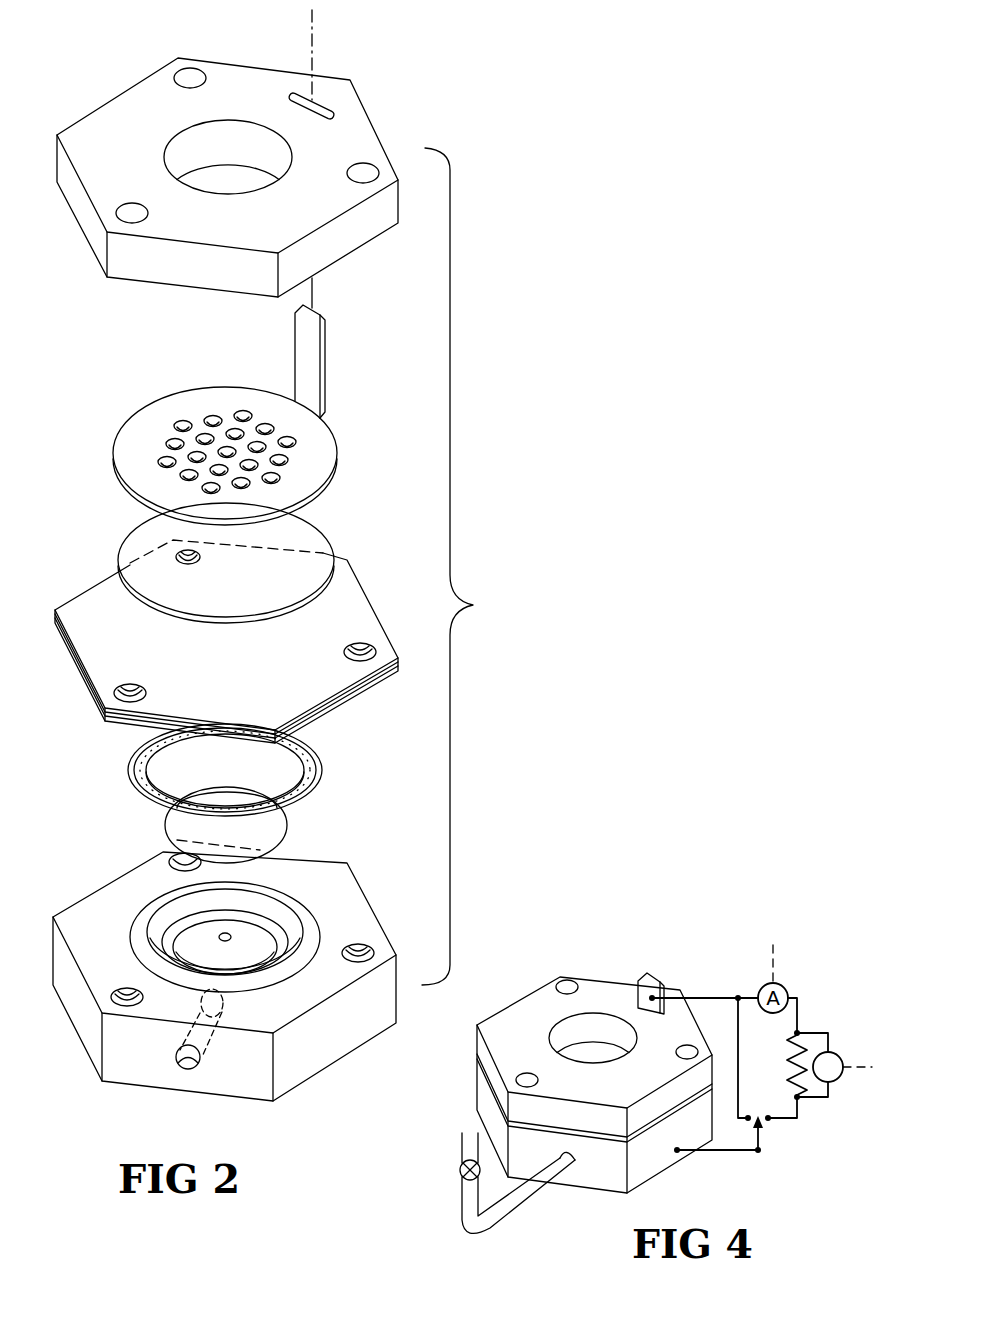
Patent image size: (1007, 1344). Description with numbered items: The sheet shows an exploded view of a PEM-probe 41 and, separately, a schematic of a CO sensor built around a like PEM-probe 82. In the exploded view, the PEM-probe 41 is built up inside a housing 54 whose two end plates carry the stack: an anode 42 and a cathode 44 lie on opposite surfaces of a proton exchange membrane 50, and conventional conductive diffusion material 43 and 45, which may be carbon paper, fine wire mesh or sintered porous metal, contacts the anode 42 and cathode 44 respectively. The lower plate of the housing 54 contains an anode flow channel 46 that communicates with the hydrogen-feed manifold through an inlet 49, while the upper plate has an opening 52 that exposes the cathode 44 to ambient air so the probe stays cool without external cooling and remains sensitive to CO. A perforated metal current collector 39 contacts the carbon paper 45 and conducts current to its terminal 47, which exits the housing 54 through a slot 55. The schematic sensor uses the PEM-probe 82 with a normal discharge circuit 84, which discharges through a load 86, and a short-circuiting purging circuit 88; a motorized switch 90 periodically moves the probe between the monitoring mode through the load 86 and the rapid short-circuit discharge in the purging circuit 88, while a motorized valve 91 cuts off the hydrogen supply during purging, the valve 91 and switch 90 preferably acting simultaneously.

In FIG. 2, the perforated electrode disk 39 is at (315, 438).
In FIG. 2, the PEM-probe 41 is at (473, 605).
In FIG. 2, the anode 42 is at (117, 723).
In FIG. 2, the conductive diffusion material 43 is at (273, 830).
In FIG. 2, the cathode 44 is at (95, 607).
In FIG. 2, the conductive diffusion material 45 is at (308, 537).
In FIG. 2, the anode flow channel 46 is at (283, 930).
In FIG. 2, the terminal 47 is at (313, 335).
In FIG. 2, the inlet 49 is at (187, 1063).
In FIG. 2, the proton exchange membrane 50 is at (345, 697).
In FIG. 2, the opening 52 is at (208, 135).
In FIG. 4, the opening 52 is at (572, 1032).
In FIG. 2, the housing 54 is at (380, 135).
In FIG. 2, the slot 55 is at (317, 110).
In FIG. 4, the PEM-probe 82 is at (607, 987).
In FIG. 4, the normal discharge circuit 84 is at (798, 1018).
In FIG. 4, the load 86 is at (800, 1075).
In FIG. 4, the short-circuiting purging circuit 88 is at (738, 1027).
In FIG. 4, the motorized switch 90 is at (758, 1143).
In FIG. 4, the motorized valve 91 is at (458, 1172).